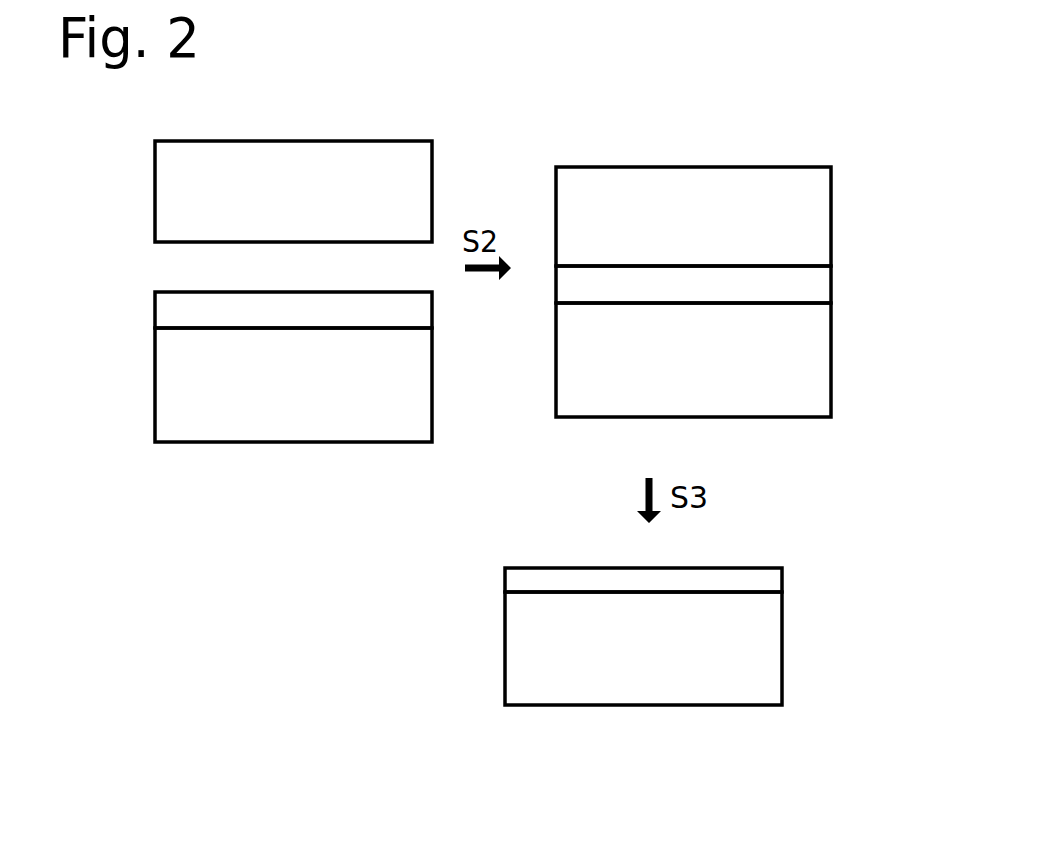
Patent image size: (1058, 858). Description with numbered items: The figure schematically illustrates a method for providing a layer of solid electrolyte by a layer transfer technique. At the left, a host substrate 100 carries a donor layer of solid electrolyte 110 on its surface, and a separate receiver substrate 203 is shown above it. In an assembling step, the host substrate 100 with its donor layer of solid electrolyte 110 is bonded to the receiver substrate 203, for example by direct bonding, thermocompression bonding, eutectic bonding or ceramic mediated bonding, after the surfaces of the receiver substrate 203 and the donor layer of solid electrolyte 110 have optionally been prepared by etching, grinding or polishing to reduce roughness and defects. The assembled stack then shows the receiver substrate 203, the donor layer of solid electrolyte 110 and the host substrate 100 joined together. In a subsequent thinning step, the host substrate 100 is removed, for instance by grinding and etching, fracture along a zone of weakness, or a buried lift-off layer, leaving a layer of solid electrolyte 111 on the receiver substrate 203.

The receiver substrate 203 is at (380, 128).
The donor layer of solid electrolyte 110 is at (145, 292).
The host substrate 100 is at (332, 453).
The layer of solid electrolyte 111 is at (791, 568).